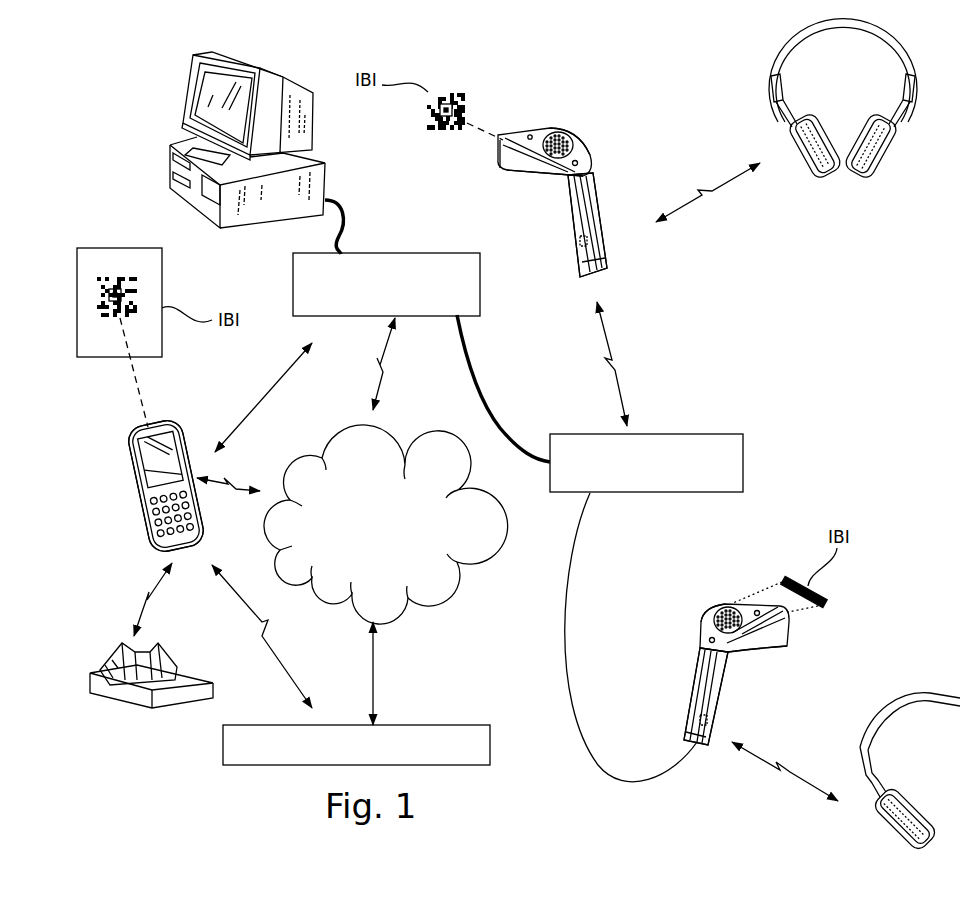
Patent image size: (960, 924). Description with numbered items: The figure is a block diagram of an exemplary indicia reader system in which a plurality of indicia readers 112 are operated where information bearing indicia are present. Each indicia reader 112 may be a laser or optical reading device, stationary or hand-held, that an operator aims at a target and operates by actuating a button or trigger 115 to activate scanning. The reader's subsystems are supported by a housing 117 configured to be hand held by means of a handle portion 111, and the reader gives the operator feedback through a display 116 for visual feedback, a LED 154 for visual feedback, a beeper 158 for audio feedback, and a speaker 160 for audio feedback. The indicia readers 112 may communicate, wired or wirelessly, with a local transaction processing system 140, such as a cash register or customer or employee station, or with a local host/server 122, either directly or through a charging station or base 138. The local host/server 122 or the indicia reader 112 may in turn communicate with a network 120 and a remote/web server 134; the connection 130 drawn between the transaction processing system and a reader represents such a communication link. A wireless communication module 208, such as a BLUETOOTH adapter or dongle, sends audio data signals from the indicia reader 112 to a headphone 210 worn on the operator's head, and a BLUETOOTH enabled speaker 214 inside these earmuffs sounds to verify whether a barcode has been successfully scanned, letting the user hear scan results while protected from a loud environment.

The local transaction processing system 140 is at (175, 140).
The local host/server 122 is at (397, 253).
The display 116 is at (157, 460).
The housing 117 is at (138, 477).
The indicia reader 112 is at (143, 510).
The trigger 115 is at (180, 512).
The base 138 is at (137, 707).
The network 120 is at (465, 592).
The remote/web server 134 is at (441, 725).
The LED 154 is at (530, 135).
The speaker 160 is at (560, 132).
The beeper 158 is at (582, 163).
The handle portion 111 is at (570, 213).
The wireless communication module 208 is at (580, 242).
The headphone 210 is at (778, 55).
The speaker 214 is at (820, 163).
The local network link 130 is at (558, 772).